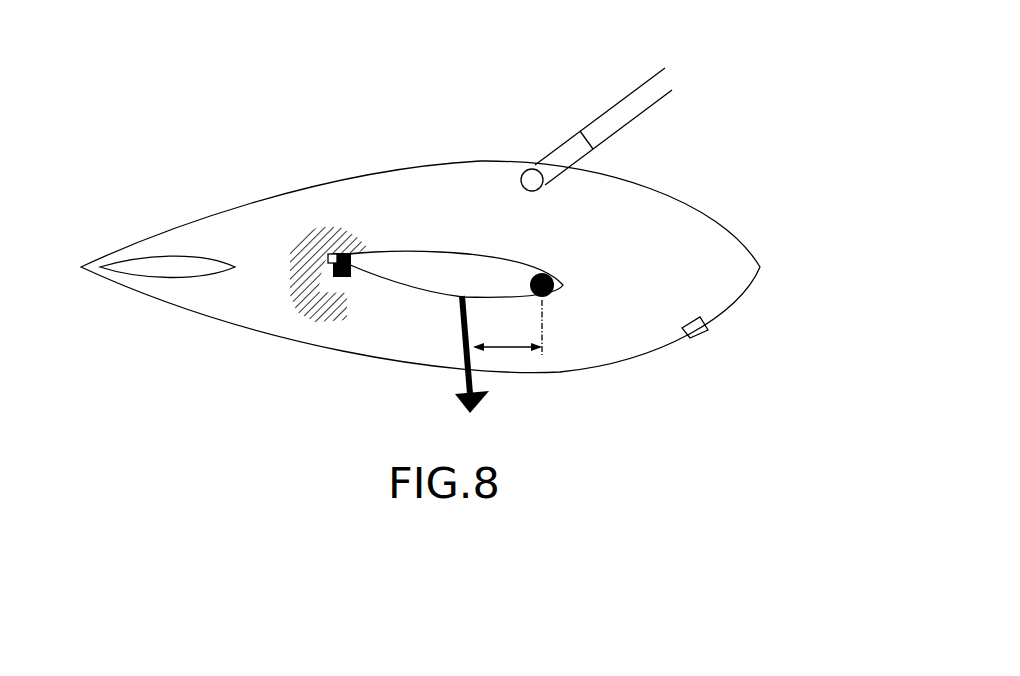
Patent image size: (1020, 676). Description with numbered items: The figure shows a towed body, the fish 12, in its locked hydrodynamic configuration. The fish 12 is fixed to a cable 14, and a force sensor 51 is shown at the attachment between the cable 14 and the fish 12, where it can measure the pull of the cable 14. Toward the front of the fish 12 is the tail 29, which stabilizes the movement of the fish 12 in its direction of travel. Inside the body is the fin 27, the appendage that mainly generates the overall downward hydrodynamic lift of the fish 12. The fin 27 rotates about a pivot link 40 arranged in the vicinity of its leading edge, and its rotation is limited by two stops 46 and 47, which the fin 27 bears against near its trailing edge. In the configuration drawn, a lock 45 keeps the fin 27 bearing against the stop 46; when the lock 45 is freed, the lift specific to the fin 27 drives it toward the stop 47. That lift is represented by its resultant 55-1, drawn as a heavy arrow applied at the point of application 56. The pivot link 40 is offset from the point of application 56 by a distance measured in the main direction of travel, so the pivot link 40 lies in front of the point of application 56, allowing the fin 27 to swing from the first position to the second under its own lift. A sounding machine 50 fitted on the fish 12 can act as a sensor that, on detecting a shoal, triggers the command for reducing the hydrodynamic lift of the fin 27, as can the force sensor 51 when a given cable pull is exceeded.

The fish 12 is at (697, 172).
The cable 14 is at (641, 89).
The fin 27 is at (447, 270).
The tail 29 is at (177, 254).
The pivot link 40 is at (548, 282).
The lock 45 is at (350, 253).
The stop 46 is at (333, 253).
The stop 47 is at (322, 320).
The sounding machine 50 is at (697, 332).
The force sensor 51 is at (557, 153).
The resultant of the hydrodynamic lift 55-1 is at (462, 338).
The point of application 56 is at (467, 290).